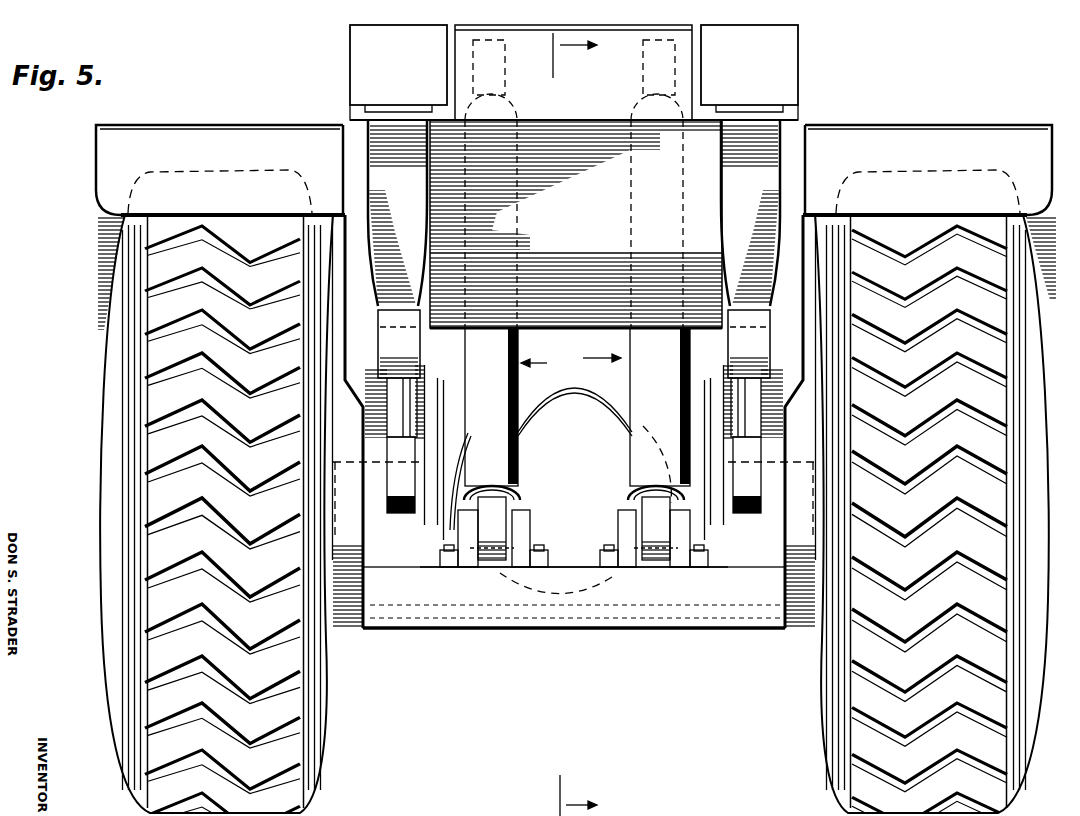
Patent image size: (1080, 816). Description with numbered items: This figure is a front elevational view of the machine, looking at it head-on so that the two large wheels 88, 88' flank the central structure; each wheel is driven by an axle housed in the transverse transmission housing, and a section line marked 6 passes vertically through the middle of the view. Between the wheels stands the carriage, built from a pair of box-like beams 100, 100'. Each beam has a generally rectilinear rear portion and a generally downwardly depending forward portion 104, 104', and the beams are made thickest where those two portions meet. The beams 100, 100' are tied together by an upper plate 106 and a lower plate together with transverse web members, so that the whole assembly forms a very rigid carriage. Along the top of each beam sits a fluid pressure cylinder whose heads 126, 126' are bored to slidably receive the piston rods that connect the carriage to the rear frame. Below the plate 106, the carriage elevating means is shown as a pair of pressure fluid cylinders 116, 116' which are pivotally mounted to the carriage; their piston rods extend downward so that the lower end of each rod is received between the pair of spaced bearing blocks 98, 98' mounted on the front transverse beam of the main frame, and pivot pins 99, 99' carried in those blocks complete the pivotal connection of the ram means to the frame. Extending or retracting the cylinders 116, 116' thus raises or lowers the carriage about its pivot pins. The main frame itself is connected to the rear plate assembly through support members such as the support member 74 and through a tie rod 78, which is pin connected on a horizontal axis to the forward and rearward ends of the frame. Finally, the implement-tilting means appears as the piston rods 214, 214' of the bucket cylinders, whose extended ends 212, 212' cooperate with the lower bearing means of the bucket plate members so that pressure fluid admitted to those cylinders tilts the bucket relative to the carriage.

The section line 6- 6 is at (565, 424).
The support member 74 is at (403, 553).
The tie rod 78 is at (575, 395).
The wheel 88 is at (236, 515).
The wheel 88' is at (913, 515).
The bearing block 98 is at (494, 544).
The bearing block 98' is at (654, 544).
The pivot pin 99 is at (512, 517).
The pivot pin 99' is at (631, 517).
The box-like beam 100 is at (397, 213).
The box-like beam 100' is at (750, 213).
The downwardly depending forward portion 104 is at (377, 333).
The downwardly depending forward portion 104' is at (769, 333).
The upper plate 106 is at (580, 220).
The pressure fluid cylinder 116 is at (472, 407).
The pressure fluid cylinder 116' is at (682, 407).
The head 126 is at (402, 72).
The head 126' is at (745, 72).
The extended end of piston rod 212 is at (328, 475).
The extended end of piston rod 212' is at (820, 475).
The piston rod 214 is at (331, 402).
The piston rod 214' is at (816, 402).